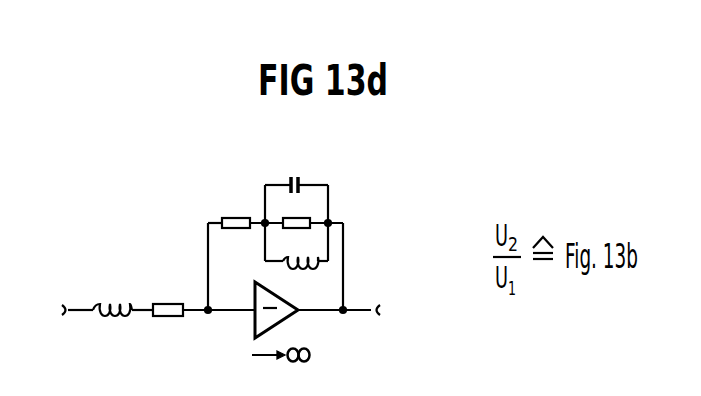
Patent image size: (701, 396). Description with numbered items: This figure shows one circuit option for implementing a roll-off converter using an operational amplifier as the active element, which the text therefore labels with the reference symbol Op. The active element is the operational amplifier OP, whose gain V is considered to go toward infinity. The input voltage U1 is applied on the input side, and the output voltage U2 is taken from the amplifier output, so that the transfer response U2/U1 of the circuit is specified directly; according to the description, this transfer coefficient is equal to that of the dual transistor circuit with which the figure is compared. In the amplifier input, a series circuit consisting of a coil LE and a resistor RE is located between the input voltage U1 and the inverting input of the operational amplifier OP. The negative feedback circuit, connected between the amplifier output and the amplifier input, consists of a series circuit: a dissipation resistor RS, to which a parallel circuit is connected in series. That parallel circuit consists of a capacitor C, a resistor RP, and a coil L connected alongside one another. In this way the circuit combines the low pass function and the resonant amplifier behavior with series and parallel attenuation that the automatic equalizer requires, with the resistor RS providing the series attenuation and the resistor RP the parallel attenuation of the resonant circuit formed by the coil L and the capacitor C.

The input voltage U1 is at (51, 311).
The coil LE is at (112, 290).
The resistor RE is at (168, 290).
The dissipation resistor RS is at (236, 203).
The resistor RP is at (298, 213).
The capacitor C is at (302, 173).
The coil L is at (298, 272).
The operational amplifier OP is at (283, 317).
The gain V is at (271, 357).
The output voltage U2 is at (394, 305).